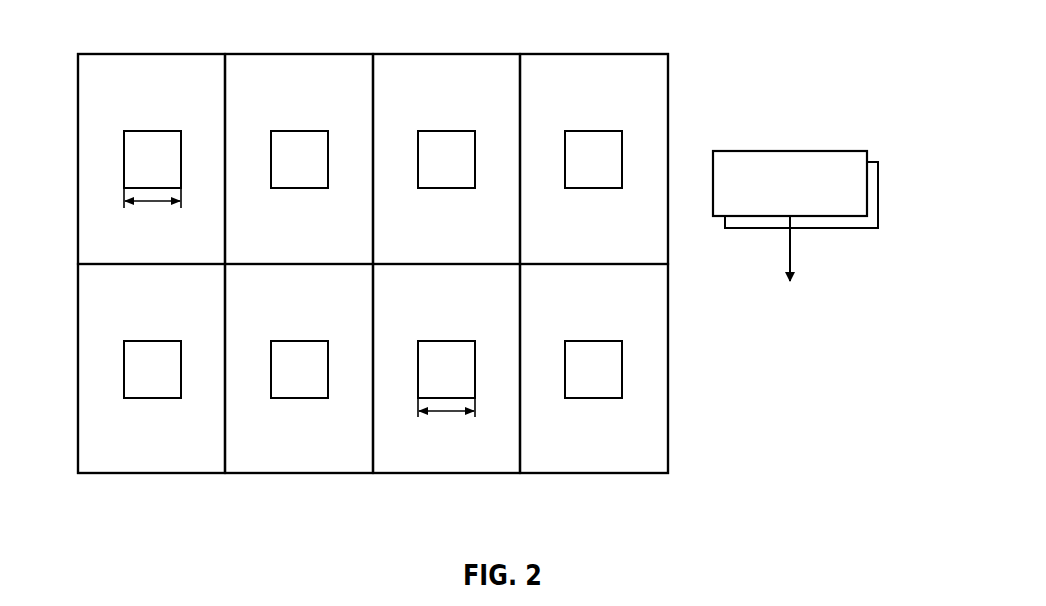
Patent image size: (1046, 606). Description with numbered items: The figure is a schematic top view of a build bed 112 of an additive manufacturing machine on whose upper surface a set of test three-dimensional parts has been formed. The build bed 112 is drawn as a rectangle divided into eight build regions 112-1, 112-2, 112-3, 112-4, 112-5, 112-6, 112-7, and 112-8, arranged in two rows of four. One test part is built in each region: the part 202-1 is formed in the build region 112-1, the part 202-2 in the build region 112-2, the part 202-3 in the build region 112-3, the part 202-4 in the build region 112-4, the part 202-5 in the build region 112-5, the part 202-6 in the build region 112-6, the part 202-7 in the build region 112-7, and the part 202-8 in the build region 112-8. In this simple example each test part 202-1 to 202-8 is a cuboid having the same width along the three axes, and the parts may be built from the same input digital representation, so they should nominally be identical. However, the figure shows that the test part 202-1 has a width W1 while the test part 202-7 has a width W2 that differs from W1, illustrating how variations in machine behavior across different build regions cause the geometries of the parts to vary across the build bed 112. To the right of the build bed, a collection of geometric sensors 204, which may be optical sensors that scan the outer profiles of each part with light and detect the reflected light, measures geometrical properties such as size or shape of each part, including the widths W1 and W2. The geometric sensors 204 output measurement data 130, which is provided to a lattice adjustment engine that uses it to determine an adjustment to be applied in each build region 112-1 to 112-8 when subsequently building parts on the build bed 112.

The build bed 112 is at (121, 30).
The build region 112-1 is at (142, 68).
The build region 112-2 is at (289, 68).
The build region 112-3 is at (437, 68).
The build region 112-4 is at (584, 68).
The build region 112-5 is at (142, 465).
The build region 112-6 is at (289, 465).
The build region 112-7 is at (437, 465).
The build region 112-8 is at (584, 465).
The 3D part 202-1 is at (171, 129).
The 3D part 202-2 is at (318, 129).
The 3D part 202-3 is at (465, 129).
The 3D part 202-4 is at (612, 129).
The 3D part 202-5 is at (171, 339).
The 3D part 202-6 is at (318, 339).
The 3D part 202-7 is at (465, 339).
The 3D part 202-8 is at (612, 339).
The width W1 is at (160, 203).
The width W2 is at (452, 414).
The geometric sensor 204 is at (897, 148).
The measurement data 130 is at (790, 322).